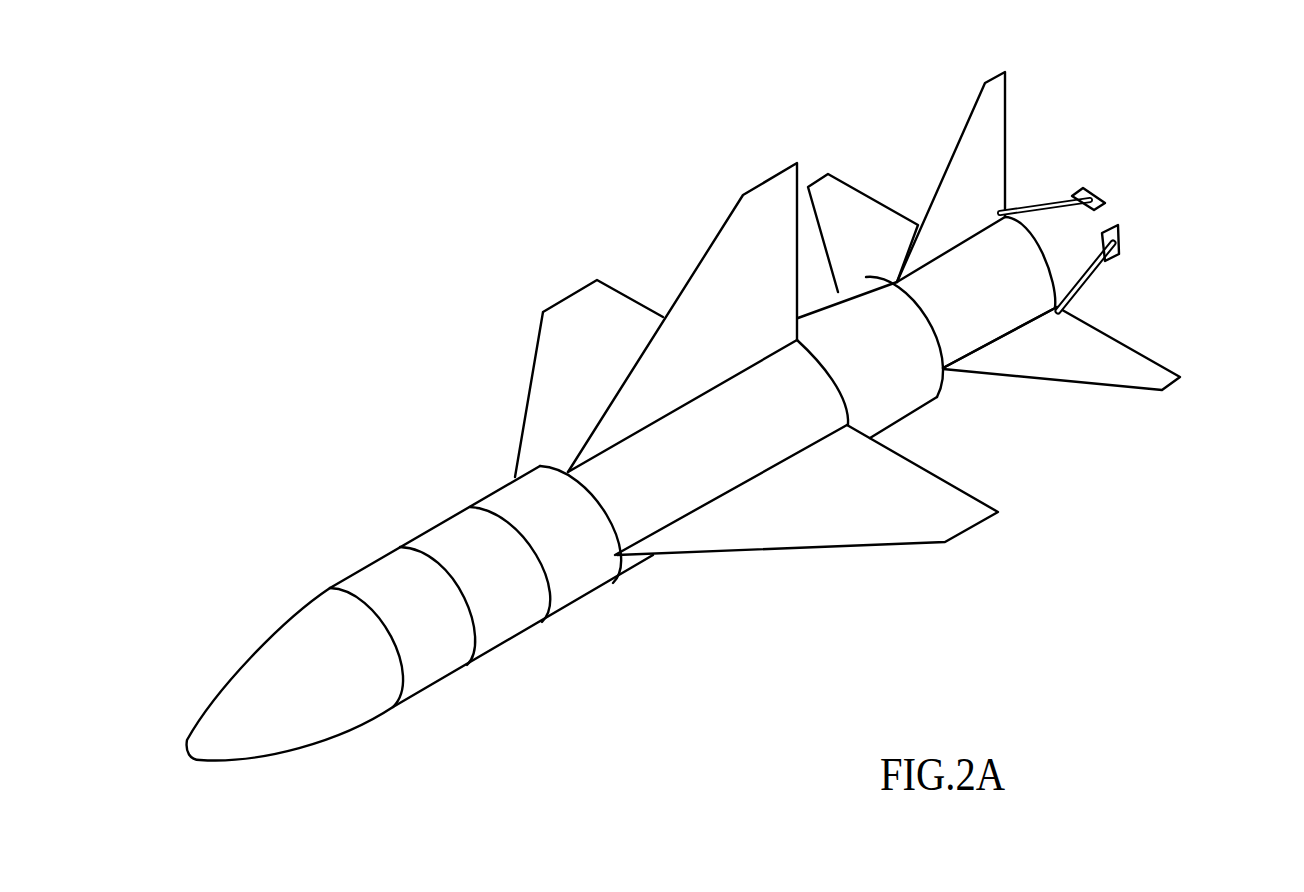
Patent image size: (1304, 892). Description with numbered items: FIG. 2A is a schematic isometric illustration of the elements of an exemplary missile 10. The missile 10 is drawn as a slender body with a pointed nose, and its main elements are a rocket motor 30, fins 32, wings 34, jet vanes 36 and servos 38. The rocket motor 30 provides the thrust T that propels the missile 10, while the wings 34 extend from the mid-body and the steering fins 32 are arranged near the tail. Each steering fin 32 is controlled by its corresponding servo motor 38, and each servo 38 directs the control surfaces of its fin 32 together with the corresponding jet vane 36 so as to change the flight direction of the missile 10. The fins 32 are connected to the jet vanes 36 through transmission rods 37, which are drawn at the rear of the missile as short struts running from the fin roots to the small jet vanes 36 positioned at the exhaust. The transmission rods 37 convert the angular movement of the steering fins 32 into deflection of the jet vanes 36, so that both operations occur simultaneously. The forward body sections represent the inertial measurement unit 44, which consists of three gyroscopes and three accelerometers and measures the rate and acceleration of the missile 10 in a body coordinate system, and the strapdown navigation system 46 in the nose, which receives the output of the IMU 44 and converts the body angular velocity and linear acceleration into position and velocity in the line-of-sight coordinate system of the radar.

The missile 10 is at (262, 449).
The rocket motor 30 is at (667, 470).
The fins 32 is at (848, 190).
The wings 34 is at (570, 307).
The jet vanes 36 is at (1090, 190).
The transmission rod 37 is at (1037, 205).
The servos 38 is at (980, 290).
The inertial measurement unit (IMU) 44 is at (500, 608).
The strapdown navigation system 46 is at (423, 663).